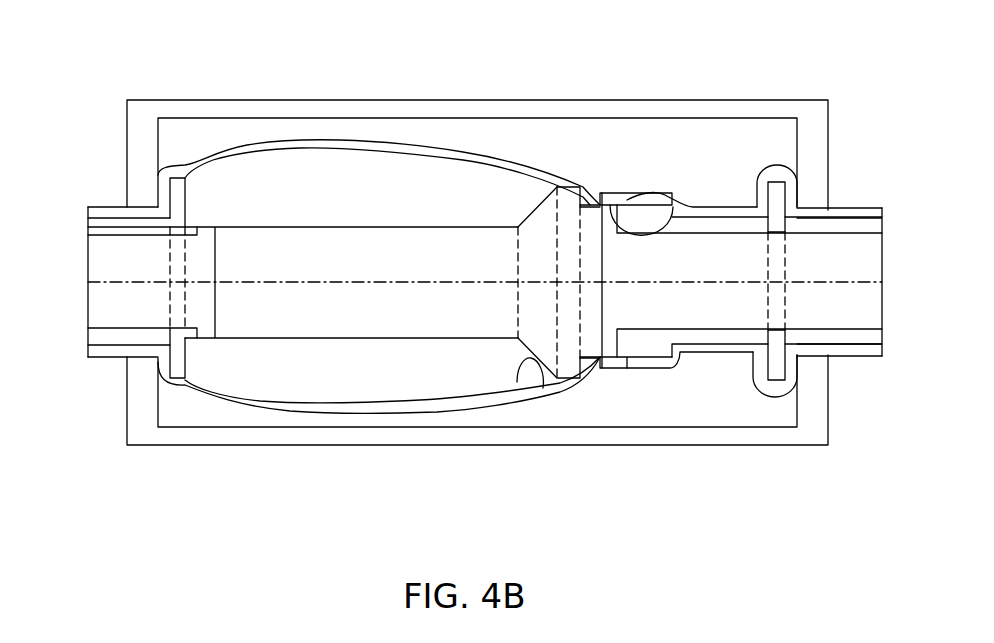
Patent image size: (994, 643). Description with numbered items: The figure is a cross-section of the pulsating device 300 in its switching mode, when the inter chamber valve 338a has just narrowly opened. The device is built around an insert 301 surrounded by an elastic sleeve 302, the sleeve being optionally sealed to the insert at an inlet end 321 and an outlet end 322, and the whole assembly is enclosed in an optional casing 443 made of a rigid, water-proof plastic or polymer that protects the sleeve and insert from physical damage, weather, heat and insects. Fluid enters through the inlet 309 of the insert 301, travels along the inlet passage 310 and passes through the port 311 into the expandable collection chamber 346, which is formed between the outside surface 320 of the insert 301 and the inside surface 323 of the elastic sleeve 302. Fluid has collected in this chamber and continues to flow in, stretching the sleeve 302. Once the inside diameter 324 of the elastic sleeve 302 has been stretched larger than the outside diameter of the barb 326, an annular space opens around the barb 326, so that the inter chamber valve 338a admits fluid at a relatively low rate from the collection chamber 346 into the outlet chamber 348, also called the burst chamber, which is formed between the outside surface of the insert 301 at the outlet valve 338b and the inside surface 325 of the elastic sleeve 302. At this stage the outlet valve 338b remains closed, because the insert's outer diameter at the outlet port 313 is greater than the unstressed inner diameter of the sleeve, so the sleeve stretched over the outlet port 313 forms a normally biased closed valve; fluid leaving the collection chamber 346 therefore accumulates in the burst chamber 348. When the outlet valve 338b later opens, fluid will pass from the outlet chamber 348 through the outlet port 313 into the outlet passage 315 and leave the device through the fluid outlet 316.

The pulsating device 300 is at (457, 172).
The insert 301 is at (268, 243).
The elastic sleeve 302 is at (353, 140).
The inlet 309 is at (88, 302).
The inlet passage 310 is at (158, 268).
The port 311 is at (205, 235).
The outlet port 313 is at (607, 232).
The outlet passage 315 is at (700, 298).
The fluid outlet 316 is at (878, 287).
The outside surface of the insert 320 is at (428, 227).
The inlet end 321 is at (97, 352).
The outlet end 322 is at (857, 356).
The inside surface of the elastic sleeve 323 is at (370, 155).
The inside diameter of the elastic sleeve 324 is at (517, 382).
The inside surface of the elastic sleeve at the outlet chamber 325 is at (673, 216).
The barb 326 is at (534, 211).
The inter chamber valve 338a is at (580, 383).
The outlet valve 338b is at (623, 203).
The collection chamber 346 is at (358, 382).
The outlet chamber 348 is at (586, 190).
The casing 443 is at (660, 100).